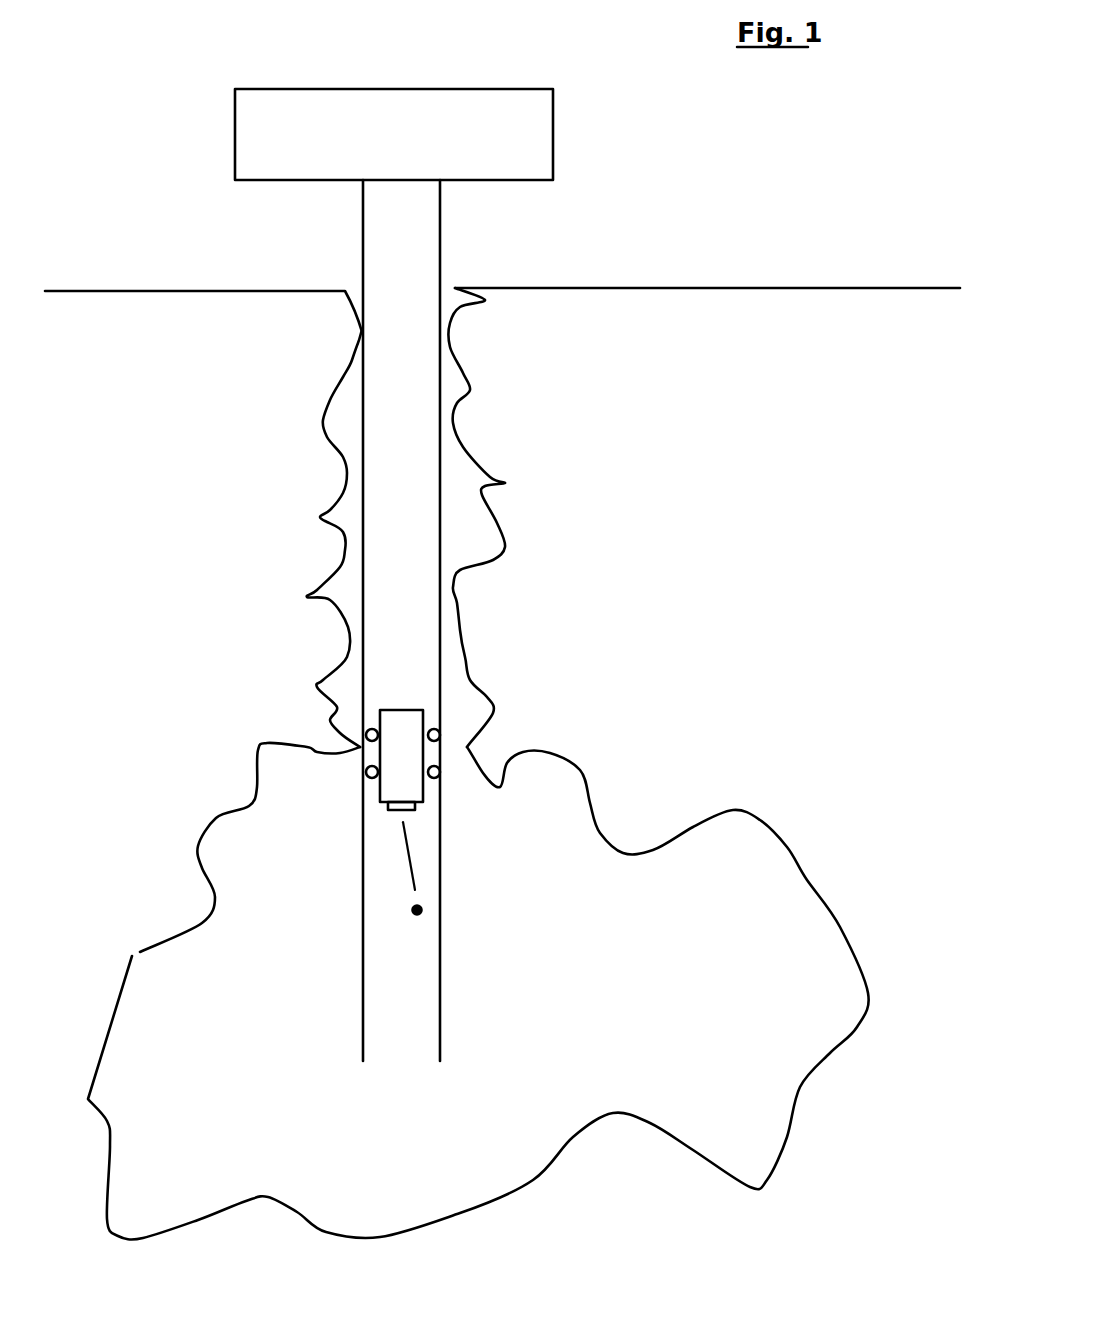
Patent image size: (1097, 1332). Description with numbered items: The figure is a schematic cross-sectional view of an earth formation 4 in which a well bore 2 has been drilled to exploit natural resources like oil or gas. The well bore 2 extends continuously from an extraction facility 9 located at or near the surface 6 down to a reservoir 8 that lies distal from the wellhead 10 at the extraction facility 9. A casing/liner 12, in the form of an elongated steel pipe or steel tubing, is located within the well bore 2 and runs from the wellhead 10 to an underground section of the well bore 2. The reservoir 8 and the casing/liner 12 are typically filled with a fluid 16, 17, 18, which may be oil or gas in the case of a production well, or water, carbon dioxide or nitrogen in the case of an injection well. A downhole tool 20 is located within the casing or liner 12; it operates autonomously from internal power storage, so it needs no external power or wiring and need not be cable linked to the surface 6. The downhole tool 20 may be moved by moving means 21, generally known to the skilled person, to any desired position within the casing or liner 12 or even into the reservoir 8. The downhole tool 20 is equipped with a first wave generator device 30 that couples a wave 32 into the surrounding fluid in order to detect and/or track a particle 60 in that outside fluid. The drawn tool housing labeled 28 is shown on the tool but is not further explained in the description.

The well bore 2 is at (473, 455).
The earth formation 4 is at (737, 307).
The surface 6 is at (670, 288).
The reservoir 8 is at (750, 847).
The extraction facility 9 is at (553, 167).
The wellhead 10 is at (440, 183).
The casing/liner 12 is at (362, 368).
The fluid 16 is at (348, 560).
The fluid 17 is at (573, 822).
The fluid 18 is at (423, 595).
The downhole tool 20 is at (393, 778).
The moving means 21 is at (362, 742).
The tool housing 28 is at (423, 797).
The first wave generator device 30 is at (410, 717).
The wave 32 is at (412, 852).
The particle 60 is at (417, 910).